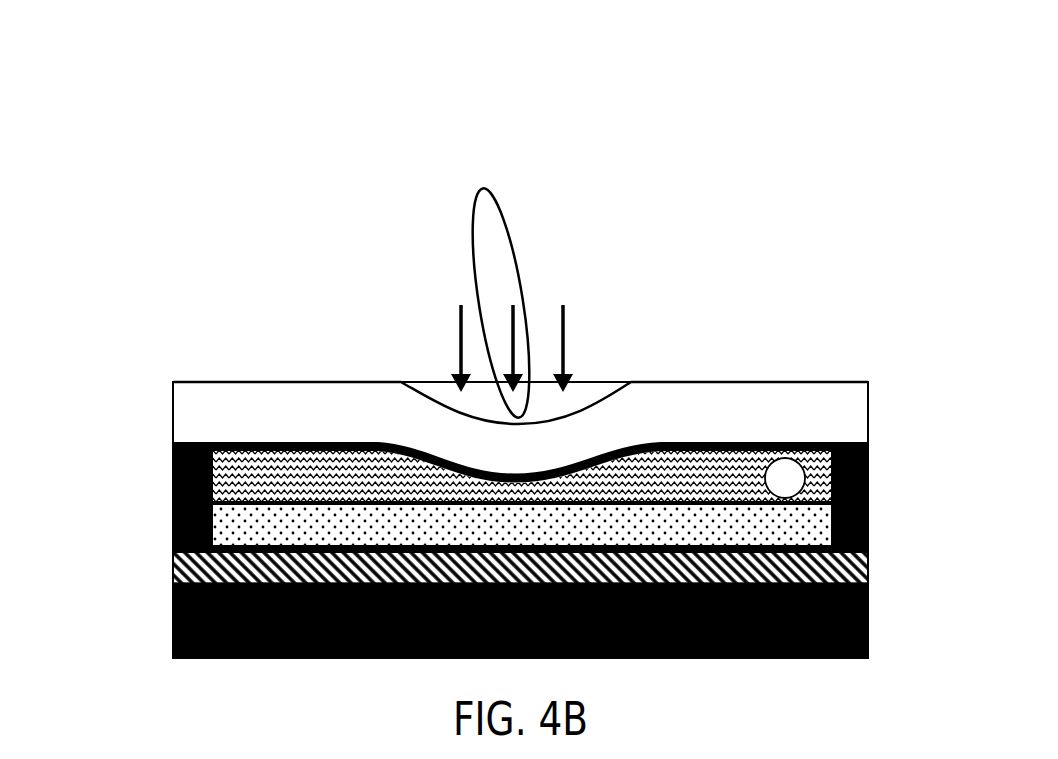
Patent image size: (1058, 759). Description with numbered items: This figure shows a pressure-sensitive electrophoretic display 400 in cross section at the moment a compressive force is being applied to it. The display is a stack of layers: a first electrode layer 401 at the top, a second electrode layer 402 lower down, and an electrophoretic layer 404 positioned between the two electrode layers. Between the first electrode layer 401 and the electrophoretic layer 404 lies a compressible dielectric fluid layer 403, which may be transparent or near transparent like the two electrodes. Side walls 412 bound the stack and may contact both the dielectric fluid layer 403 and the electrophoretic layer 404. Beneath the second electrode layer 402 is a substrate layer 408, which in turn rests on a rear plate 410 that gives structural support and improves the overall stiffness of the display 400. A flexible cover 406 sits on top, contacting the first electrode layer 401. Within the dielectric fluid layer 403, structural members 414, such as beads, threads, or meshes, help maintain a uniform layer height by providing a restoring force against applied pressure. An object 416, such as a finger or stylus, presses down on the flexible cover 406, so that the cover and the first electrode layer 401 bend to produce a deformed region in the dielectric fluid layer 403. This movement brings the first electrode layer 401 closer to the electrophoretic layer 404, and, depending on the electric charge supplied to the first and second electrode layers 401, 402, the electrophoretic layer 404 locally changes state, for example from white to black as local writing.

The pressure-sensitive electrophoretic display 400 is at (207, 273).
The first electrode layer 401 is at (165, 437).
The second electrode layer 402 is at (165, 543).
The dielectric fluid layer 403 is at (232, 471).
The electrophoretic layer 404 is at (237, 519).
The flexible cover 406 is at (848, 405).
The substrate layer 408 is at (863, 560).
The rear plate 410 is at (863, 612).
The side walls 412 is at (863, 515).
The structural members 414 is at (778, 469).
The object 416 is at (490, 247).